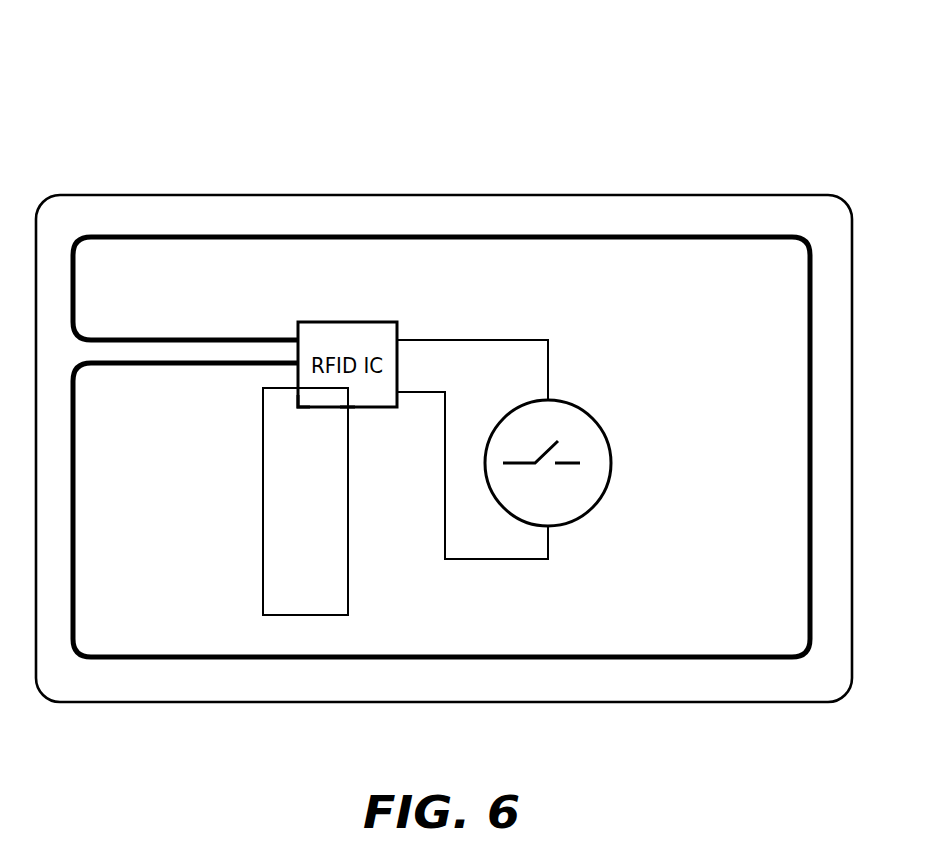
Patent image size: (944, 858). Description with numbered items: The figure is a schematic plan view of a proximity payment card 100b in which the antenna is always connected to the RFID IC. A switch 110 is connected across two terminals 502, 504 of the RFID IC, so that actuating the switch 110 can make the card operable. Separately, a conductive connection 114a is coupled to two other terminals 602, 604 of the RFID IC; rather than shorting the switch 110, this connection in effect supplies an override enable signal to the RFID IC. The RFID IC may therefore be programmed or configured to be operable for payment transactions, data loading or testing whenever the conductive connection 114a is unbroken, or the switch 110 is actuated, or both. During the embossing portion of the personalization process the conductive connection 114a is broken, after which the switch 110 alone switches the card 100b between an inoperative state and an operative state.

The proximity payment card 100b is at (388, 90).
The conductive connection 114a is at (262, 502).
The terminal of the RFID IC 502 is at (398, 338).
The terminal of the RFID IC 504 is at (398, 392).
The switch 110 is at (582, 408).
The terminal of the RFID IC 602 is at (296, 400).
The terminal of the RFID IC 604 is at (347, 407).